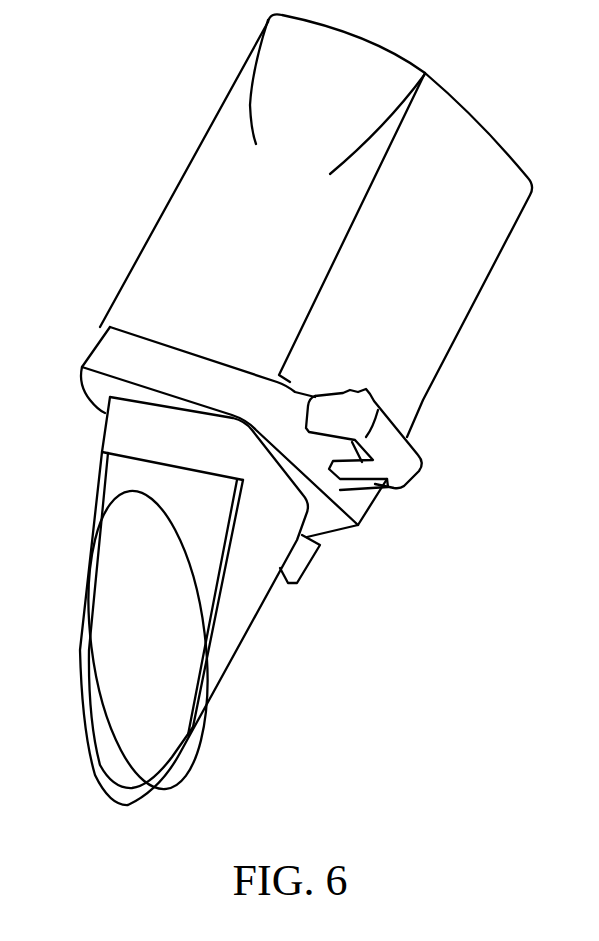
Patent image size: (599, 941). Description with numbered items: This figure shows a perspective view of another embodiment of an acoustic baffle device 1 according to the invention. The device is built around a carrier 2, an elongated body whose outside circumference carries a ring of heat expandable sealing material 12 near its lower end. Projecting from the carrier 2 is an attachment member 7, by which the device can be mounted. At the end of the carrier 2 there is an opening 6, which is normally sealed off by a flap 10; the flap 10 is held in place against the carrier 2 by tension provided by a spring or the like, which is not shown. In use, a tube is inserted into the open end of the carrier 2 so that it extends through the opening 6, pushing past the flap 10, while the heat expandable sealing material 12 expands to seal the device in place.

The acoustic baffle device 1 is at (173, 148).
The carrier 2 is at (456, 343).
The opening 6 is at (178, 622).
The attachment member 7 is at (420, 466).
The flap 10 is at (96, 523).
The heat expandable sealing material 12 is at (91, 352).